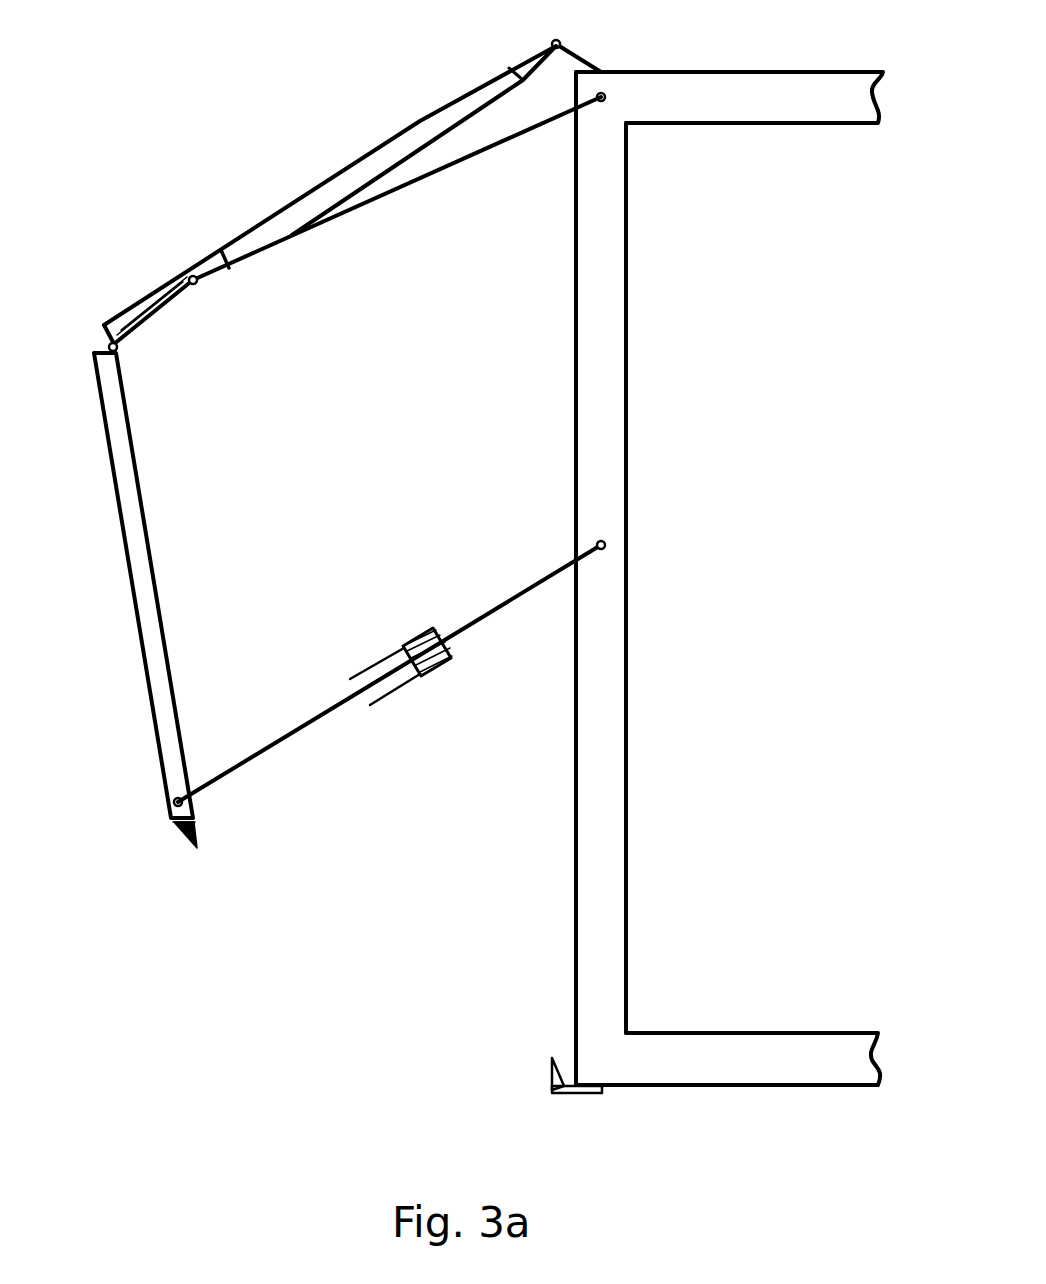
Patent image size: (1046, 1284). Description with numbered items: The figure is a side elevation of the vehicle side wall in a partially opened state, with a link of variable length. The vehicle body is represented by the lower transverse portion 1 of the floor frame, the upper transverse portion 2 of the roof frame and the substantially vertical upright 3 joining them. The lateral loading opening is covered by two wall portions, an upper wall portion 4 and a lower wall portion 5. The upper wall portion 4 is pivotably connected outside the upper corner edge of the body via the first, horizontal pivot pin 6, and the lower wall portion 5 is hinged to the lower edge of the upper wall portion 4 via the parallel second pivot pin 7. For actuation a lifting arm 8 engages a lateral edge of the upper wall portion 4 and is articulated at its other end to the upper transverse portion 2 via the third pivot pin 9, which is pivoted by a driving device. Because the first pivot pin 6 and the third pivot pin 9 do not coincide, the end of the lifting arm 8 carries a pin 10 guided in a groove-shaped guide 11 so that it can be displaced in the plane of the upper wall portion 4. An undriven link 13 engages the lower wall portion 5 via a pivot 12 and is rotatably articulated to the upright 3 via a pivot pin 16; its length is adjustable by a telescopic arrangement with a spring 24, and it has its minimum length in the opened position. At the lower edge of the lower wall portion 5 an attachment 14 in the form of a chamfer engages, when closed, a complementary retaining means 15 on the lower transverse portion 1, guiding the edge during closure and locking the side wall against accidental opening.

The lower transverse portion 1 is at (745, 1053).
The upper transverse portion 2 is at (748, 92).
The upright 3 is at (612, 753).
The upper wall portion 4 is at (390, 152).
The lower wall portion 5 is at (150, 657).
The first pivot pin 6 is at (551, 44).
The second pivot pin 7 is at (108, 347).
The lifting arm 8 is at (527, 132).
The third pivot pin 9 is at (603, 92).
The pin 10 is at (192, 275).
The guide 11 is at (126, 326).
The pivot 12 is at (172, 800).
The link 13 is at (340, 707).
The attachment 14 is at (195, 820).
The retaining means 15 is at (551, 1090).
The pivot pin 16 is at (612, 544).
The spring 24 is at (407, 648).